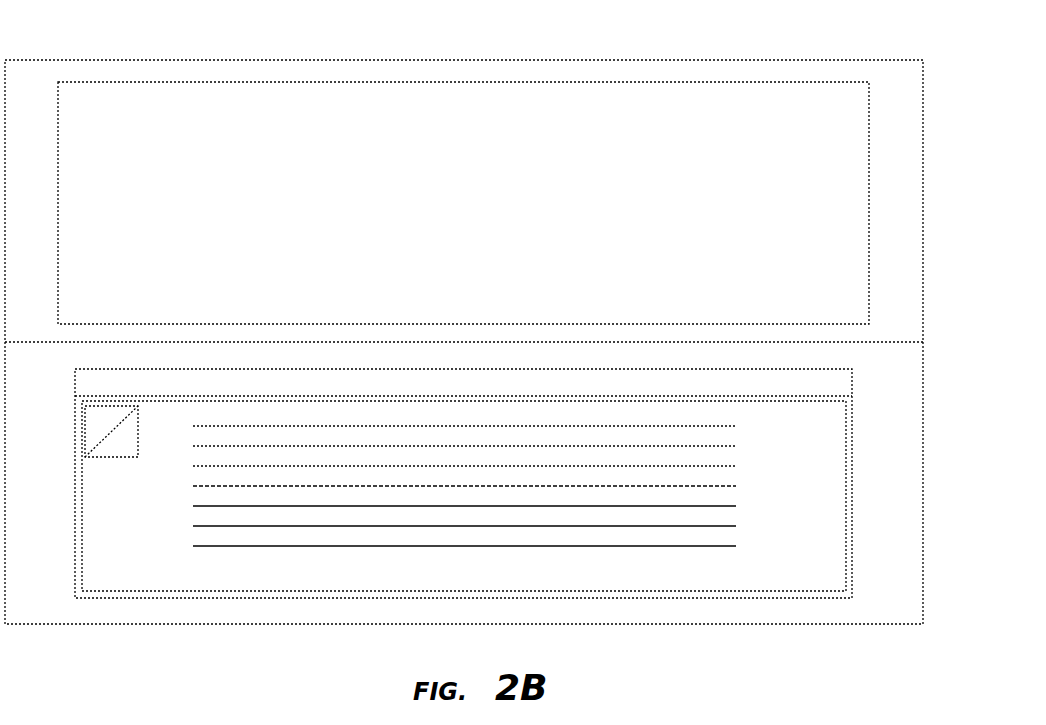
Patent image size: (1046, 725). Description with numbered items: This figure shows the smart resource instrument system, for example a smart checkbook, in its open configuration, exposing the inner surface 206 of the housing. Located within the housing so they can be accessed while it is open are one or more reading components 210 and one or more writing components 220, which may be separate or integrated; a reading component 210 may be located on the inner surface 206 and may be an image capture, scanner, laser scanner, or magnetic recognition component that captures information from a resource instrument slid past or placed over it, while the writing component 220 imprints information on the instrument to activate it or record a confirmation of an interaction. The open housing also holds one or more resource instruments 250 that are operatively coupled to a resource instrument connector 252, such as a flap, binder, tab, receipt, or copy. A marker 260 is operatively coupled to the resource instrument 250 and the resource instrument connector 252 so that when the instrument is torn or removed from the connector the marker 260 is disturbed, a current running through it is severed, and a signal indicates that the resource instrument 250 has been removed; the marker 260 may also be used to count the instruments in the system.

The inner surface 206 is at (896, 102).
The reading component 210 is at (638, 151).
The writing component 220 is at (217, 132).
The resource instrument 250 is at (710, 552).
The resource instrument connector 252 is at (217, 368).
The marker 260 is at (112, 430).